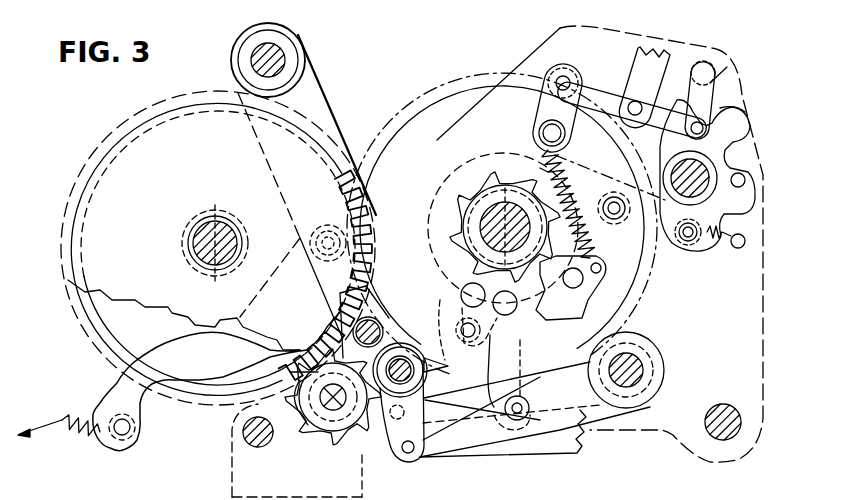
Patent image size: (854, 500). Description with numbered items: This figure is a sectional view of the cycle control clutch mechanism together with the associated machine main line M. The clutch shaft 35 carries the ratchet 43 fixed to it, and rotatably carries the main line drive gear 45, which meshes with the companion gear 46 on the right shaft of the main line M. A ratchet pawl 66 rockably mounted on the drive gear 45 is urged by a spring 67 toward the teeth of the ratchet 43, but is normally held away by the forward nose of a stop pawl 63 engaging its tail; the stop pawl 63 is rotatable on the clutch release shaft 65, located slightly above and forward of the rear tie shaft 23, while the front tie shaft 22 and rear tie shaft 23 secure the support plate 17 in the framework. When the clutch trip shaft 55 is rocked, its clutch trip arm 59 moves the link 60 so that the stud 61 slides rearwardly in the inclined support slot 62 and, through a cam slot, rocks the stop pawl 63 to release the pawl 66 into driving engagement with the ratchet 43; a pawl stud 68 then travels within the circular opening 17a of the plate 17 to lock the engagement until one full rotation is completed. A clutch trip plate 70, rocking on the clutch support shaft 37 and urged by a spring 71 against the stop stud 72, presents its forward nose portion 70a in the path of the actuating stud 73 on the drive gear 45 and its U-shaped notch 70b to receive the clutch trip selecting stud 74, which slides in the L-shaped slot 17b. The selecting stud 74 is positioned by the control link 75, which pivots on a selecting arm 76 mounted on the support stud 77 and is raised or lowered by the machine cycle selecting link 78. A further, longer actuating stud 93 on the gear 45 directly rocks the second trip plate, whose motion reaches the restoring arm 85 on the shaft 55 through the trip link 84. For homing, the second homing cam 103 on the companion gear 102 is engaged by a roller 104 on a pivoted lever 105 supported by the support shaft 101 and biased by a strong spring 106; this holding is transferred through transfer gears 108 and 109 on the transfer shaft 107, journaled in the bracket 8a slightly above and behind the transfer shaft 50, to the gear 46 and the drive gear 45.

The bracket 8a is at (232, 472).
The support plate 17 is at (452, 88).
The circular opening 17a is at (481, 155).
The L-shaped slot 17b is at (685, 67).
The front tie shaft 22 is at (362, 290).
The rear tie shaft 23 is at (710, 414).
The clutch shaft 35 is at (480, 228).
The clutch support shaft 37 is at (677, 163).
The ratchet member 43 is at (480, 190).
The main line drive gear 45 is at (403, 124).
The companion gear 46 is at (318, 170).
The transfer shaft 50 is at (243, 431).
The clutch trip shaft 55 is at (399, 356).
The clutch trip arm 59 is at (357, 470).
The link 60 is at (440, 455).
The stud 61 is at (523, 368).
The inclined support slot 62 is at (598, 396).
The stop pawl 63 is at (613, 413).
The clutch release shaft 65 is at (640, 367).
The ratchet pawl 66 is at (556, 302).
The spring 67 is at (545, 178).
The pawl stud 68 is at (574, 289).
The clutch trip plate 70 is at (730, 137).
The forward nose portion 70a is at (615, 187).
The U-shaped notch 70b is at (710, 115).
The spring 71 is at (717, 231).
The stop stud 72 is at (745, 178).
The actuating stud 73 is at (623, 218).
The clutch trip selecting stud 74 is at (717, 90).
The control link 75 is at (592, 90).
The selecting arm 76 is at (537, 100).
The support stud 77 is at (540, 132).
The machine cycle selecting link 78 is at (660, 50).
The trip link 84 is at (545, 452).
The restoring arm 85 is at (448, 312).
The actuating stud 93 is at (478, 372).
The support shaft 101 is at (290, 35).
The companion gear 102 is at (90, 318).
The second homing cam 103 is at (118, 128).
The roller 104 is at (308, 238).
The pivoted lever 105 is at (320, 86).
The spring 106 is at (62, 412).
The transfer shaft 107 is at (337, 412).
The transfer gear 108 is at (297, 440).
The transfer gear 109 is at (330, 433).
The main line M is at (196, 262).